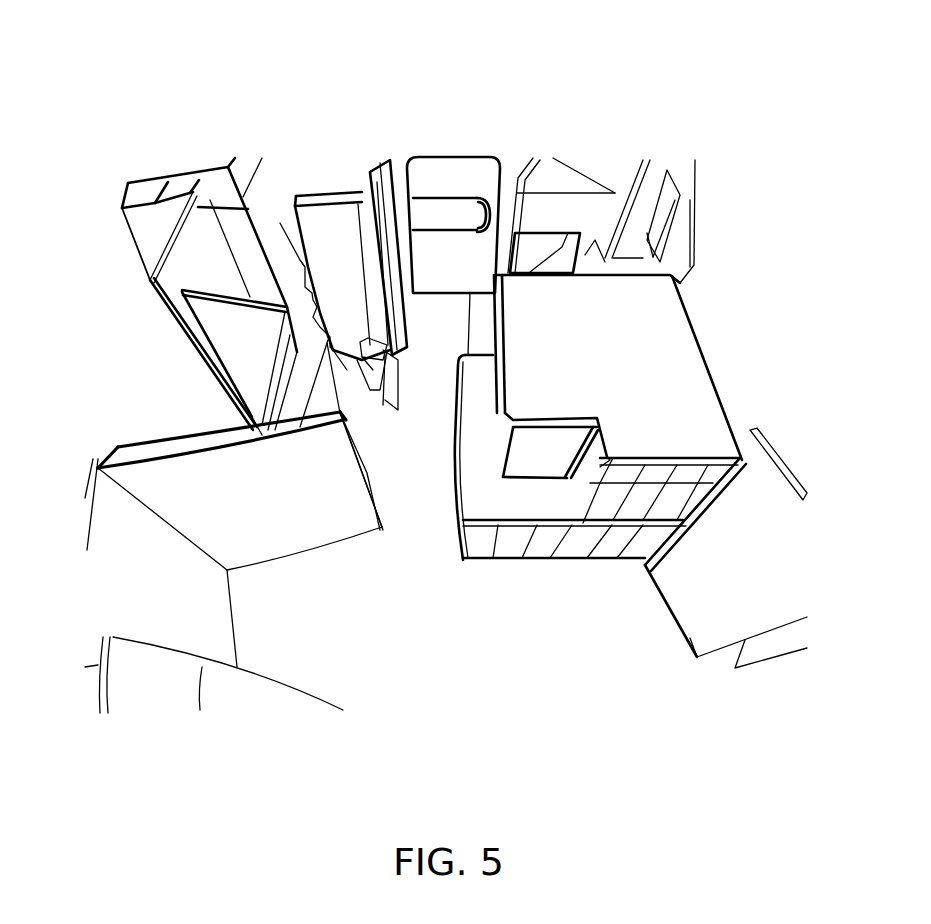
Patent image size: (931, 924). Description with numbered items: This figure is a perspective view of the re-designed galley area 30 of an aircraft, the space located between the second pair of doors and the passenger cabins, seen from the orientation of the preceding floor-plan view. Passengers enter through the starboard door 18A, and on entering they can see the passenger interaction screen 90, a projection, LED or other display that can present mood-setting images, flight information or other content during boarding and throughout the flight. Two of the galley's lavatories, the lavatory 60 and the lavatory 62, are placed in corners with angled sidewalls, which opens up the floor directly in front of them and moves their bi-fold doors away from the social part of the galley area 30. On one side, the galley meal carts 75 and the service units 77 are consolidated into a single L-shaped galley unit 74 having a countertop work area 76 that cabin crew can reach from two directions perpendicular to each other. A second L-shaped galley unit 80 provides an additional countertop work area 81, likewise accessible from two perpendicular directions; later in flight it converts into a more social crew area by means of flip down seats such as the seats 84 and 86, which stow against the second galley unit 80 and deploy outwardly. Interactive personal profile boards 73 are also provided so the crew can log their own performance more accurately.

The galley area 30 is at (52, 97).
The door 18A is at (437, 172).
The lavatory 60 is at (570, 243).
The lavatory 62 is at (337, 237).
The interactive personal profile board 73 is at (545, 467).
The L-shaped galley unit 74 is at (655, 325).
The galley meal cart 75 is at (500, 565).
The countertop work area 76 is at (495, 498).
The service unit 77 is at (607, 497).
The second L-shaped galley unit 80 is at (308, 397).
The countertop work area 81 is at (363, 423).
The flip down seat 84 is at (281, 222).
The flip down seat 86 is at (364, 340).
The passenger interaction screen 90 is at (180, 477).